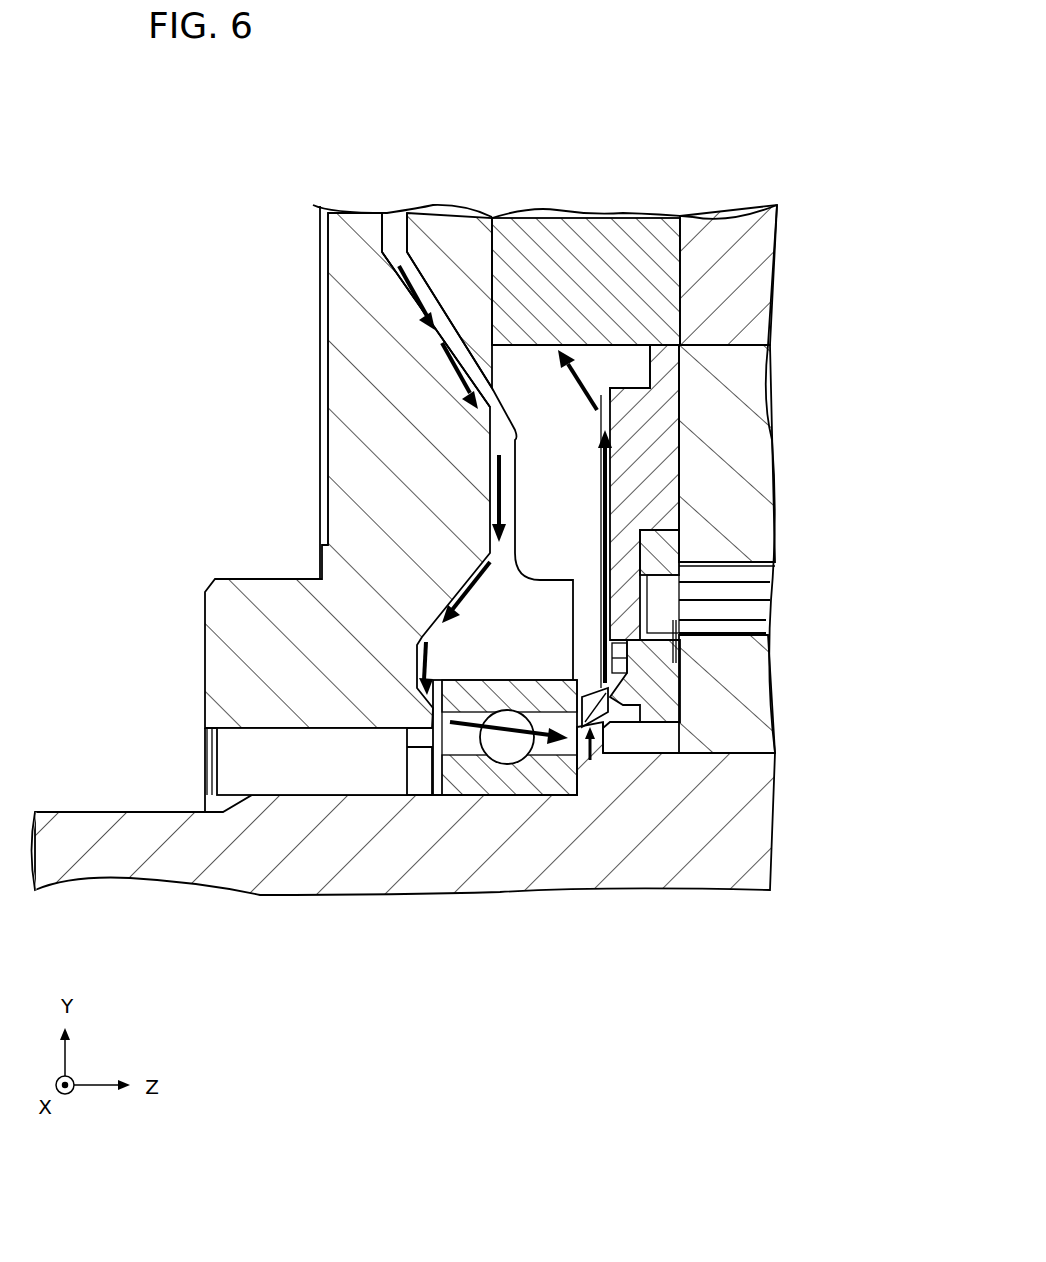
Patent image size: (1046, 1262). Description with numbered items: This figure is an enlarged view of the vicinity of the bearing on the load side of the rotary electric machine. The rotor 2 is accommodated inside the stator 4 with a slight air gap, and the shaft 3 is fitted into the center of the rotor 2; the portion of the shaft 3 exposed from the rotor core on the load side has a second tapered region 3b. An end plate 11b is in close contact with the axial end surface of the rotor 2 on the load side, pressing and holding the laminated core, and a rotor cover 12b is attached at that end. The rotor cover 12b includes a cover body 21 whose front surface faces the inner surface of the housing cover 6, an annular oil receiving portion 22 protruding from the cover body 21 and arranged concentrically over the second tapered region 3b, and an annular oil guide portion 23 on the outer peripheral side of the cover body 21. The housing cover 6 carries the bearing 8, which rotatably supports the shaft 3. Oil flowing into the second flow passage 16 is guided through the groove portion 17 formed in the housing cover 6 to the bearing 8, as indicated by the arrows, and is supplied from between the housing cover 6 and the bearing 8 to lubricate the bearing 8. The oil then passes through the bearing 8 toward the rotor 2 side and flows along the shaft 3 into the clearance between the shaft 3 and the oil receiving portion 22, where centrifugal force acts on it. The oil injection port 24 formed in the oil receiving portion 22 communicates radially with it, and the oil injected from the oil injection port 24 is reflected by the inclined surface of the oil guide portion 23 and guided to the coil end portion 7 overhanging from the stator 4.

The rotor 2 is at (732, 345).
The shaft 3 is at (118, 810).
The second tapered region 3b is at (588, 770).
The stator 4 is at (730, 214).
The housing cover 6 is at (318, 444).
The coil end portion 7 is at (578, 216).
The bearing 8 is at (470, 800).
The end plate 11b is at (680, 680).
The rotor cover 12b is at (700, 420).
The second flow passage 16 is at (427, 282).
The groove portion 17 is at (427, 282).
The cover body 21 is at (683, 487).
The oil receiving portion 22 is at (586, 690).
The oil guide portion 23 is at (607, 438).
The oil injection port 24 is at (600, 683).